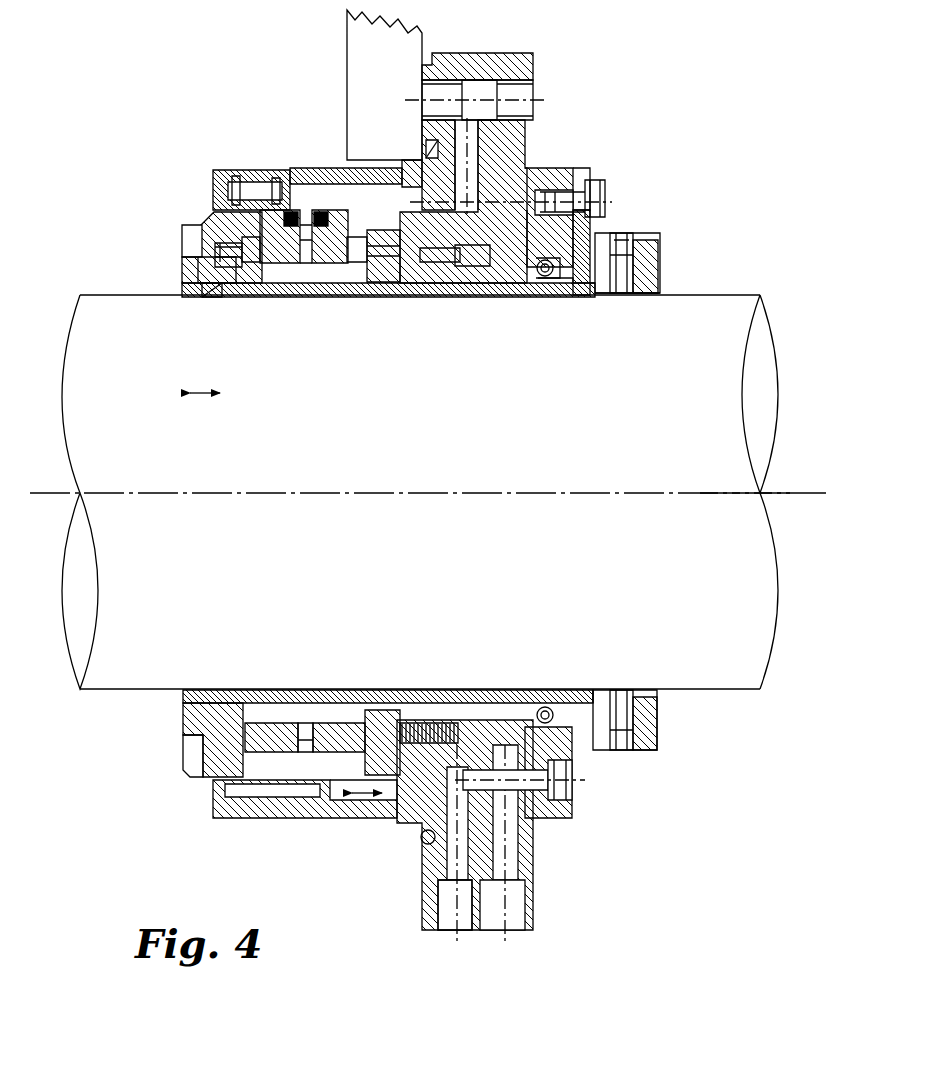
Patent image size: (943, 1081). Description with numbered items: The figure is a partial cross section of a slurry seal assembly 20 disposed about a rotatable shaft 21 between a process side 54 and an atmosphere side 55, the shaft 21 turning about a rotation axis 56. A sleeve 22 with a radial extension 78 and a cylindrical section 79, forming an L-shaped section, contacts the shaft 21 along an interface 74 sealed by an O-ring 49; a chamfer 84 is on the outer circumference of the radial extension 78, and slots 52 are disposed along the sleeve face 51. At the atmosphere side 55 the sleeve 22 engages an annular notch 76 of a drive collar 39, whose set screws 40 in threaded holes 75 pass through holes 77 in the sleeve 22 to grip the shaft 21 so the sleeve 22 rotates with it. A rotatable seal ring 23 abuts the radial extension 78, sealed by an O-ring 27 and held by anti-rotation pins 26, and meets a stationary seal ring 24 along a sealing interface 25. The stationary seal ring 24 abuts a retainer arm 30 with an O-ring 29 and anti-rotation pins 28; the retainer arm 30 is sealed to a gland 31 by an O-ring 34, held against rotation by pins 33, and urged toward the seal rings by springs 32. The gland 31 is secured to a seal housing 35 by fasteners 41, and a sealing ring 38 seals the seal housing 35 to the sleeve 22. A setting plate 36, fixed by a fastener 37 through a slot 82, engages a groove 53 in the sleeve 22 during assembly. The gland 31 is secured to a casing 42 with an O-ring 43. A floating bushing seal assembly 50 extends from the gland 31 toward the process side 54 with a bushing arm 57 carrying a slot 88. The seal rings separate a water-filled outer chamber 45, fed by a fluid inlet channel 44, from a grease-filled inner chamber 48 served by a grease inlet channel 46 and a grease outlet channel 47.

The slurry seal assembly 20 is at (235, 97).
The rotatable shaft 21 is at (136, 382).
The sleeve 22 is at (186, 270).
The rotatable seal ring 23 is at (262, 722).
The stationary seal ring 24 is at (335, 722).
The sealing interface 25 is at (305, 722).
The anti-rotation pin 26 is at (248, 264).
The O-ring 27 is at (262, 820).
The anti-rotation pin 28 is at (352, 298).
The O-ring 29 is at (330, 820).
The retainer arm 30 is at (385, 298).
The gland 31 is at (520, 268).
The spring 32 is at (430, 722).
The pin 33 is at (440, 298).
The O-ring 34 is at (400, 298).
The seal housing 35 is at (548, 168).
The setting plate 36 is at (590, 170).
The fastener 37 is at (604, 196).
The sealing ring 38 is at (545, 296).
The drive collar 39 is at (657, 258).
The set screw 40 is at (628, 233).
The fastener 41 is at (574, 785).
The casing 42 is at (372, 72).
The O-ring 43 is at (425, 148).
The fluid inlet channel 44 is at (520, 96).
The outer chamber 45 is at (371, 204).
The grease inlet channel 46 is at (446, 893).
The grease outlet channel 47 is at (512, 895).
The inner chamber 48 is at (360, 710).
The O-ring 49 is at (210, 298).
The floating bushing seal assembly 50 is at (190, 168).
The sleeve face 51 is at (184, 706).
The slot 52 is at (188, 240).
The groove 53 is at (582, 296).
The process side 54 is at (56, 287).
The atmosphere side 55 is at (809, 708).
The rotation axis 56 is at (756, 479).
The bushing arm 57 is at (300, 168).
The interface 74 is at (555, 300).
The threaded hole 75 is at (655, 268).
The annular notch 76 is at (620, 690).
The hole 77 is at (634, 296).
The radial extension 78 is at (220, 225).
The cylindrical section 79 is at (300, 298).
The slot 82 is at (580, 222).
The chamfer 84 is at (182, 225).
The slot 88 is at (262, 182).